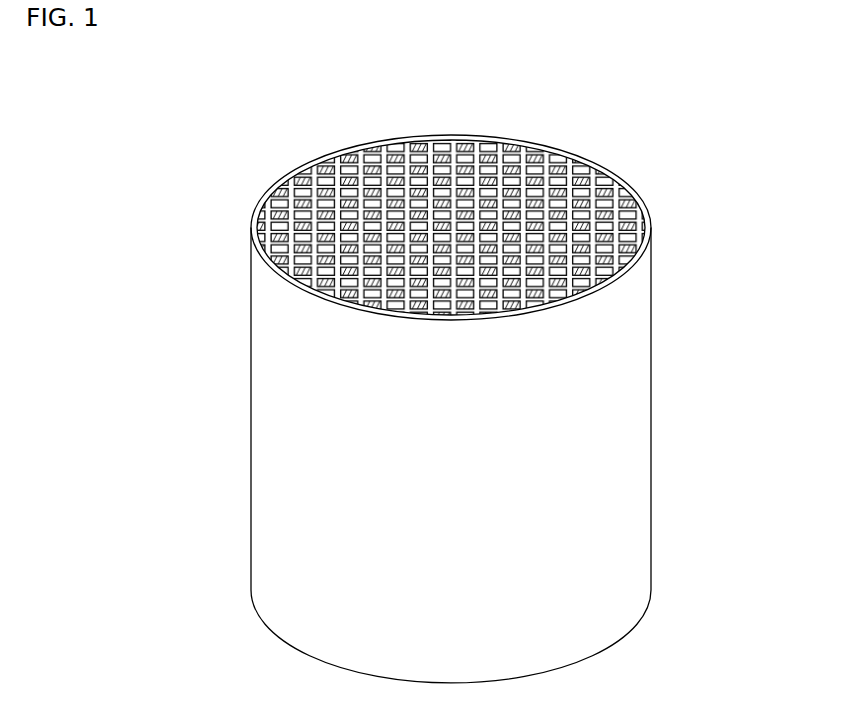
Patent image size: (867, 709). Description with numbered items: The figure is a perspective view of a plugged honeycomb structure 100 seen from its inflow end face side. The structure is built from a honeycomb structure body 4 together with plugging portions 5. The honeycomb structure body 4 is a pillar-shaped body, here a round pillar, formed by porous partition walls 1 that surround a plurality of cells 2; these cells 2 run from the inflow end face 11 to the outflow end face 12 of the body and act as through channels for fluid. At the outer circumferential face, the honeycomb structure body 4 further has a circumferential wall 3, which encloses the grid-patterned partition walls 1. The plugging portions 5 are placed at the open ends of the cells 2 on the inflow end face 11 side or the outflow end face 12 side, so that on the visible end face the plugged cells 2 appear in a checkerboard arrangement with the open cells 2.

The plugged honeycomb structure 100 is at (682, 77).
The partition walls 1 is at (500, 150).
The cells 2 is at (440, 167).
The circumferential wall 3 is at (630, 295).
The honeycomb structure body 4 is at (658, 402).
The plugging portions 5 is at (580, 198).
The inflow end face 11 is at (263, 192).
The outflow end face 12 is at (265, 633).